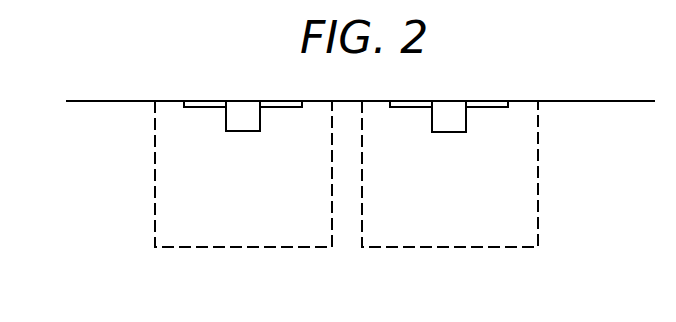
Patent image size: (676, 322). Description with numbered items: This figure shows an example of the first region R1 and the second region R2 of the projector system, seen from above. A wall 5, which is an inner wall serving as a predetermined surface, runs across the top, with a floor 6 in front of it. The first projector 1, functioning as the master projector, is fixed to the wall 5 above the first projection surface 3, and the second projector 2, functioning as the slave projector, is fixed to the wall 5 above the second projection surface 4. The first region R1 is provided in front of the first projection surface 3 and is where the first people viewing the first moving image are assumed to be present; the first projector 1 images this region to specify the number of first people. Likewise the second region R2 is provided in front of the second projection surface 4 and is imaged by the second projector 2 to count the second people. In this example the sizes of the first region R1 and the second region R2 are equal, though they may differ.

The first projector 1 is at (260, 118).
The second projector 2 is at (466, 118).
The first projection surface 3 is at (190, 108).
The second projection surface 4 is at (395, 108).
The wall 5 is at (93, 102).
The floor 6 is at (113, 173).
The first region R1 is at (230, 247).
The second region R2 is at (435, 247).